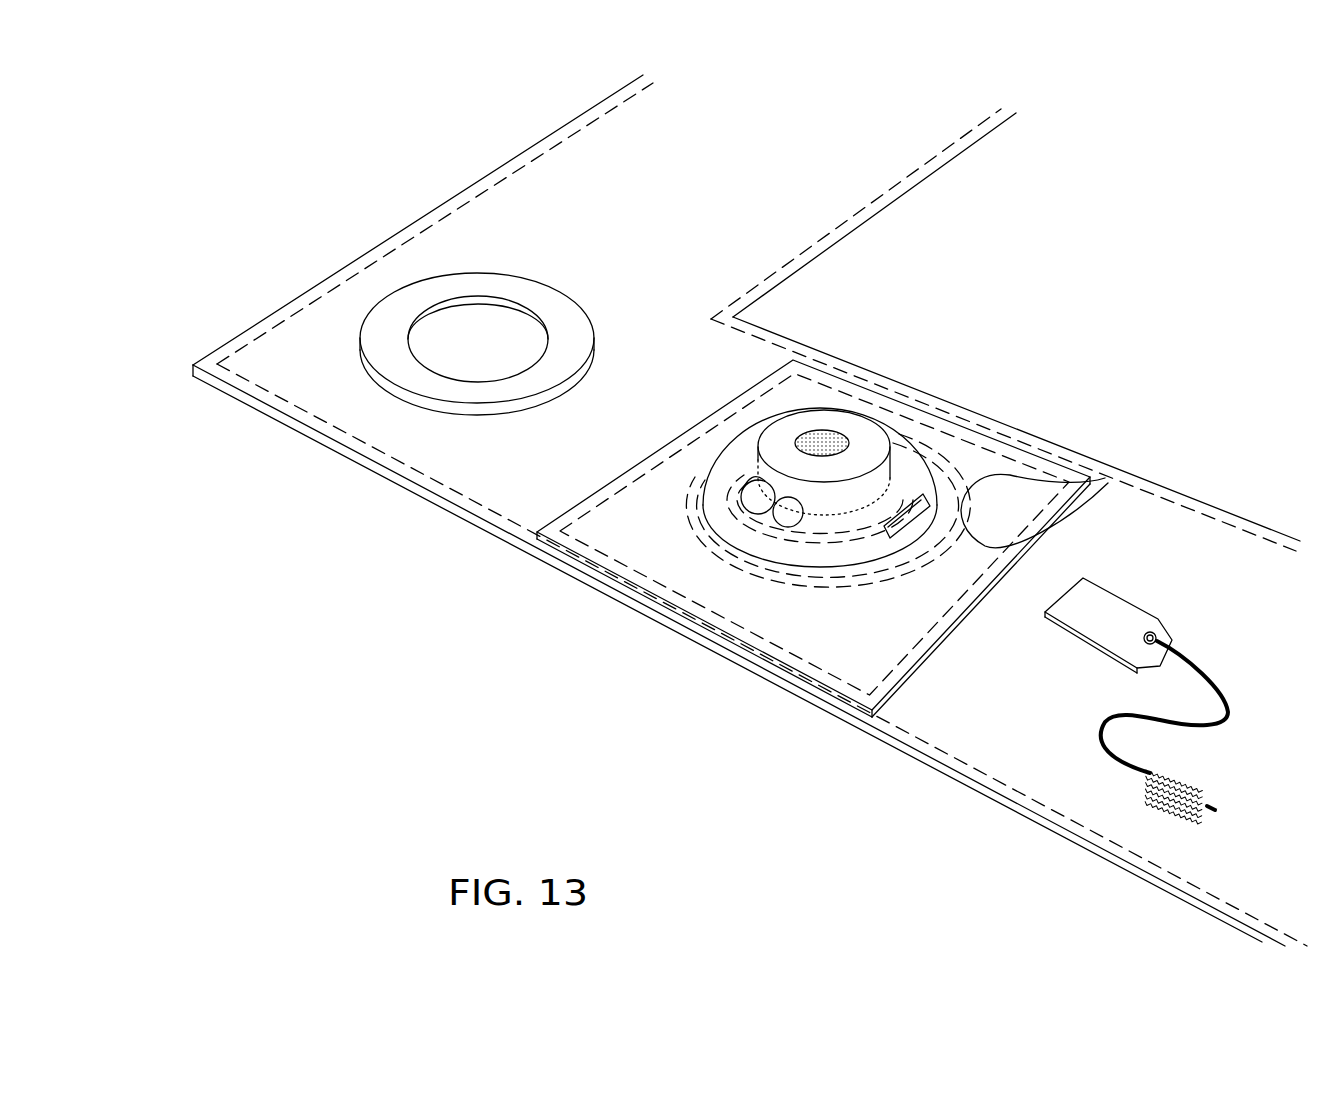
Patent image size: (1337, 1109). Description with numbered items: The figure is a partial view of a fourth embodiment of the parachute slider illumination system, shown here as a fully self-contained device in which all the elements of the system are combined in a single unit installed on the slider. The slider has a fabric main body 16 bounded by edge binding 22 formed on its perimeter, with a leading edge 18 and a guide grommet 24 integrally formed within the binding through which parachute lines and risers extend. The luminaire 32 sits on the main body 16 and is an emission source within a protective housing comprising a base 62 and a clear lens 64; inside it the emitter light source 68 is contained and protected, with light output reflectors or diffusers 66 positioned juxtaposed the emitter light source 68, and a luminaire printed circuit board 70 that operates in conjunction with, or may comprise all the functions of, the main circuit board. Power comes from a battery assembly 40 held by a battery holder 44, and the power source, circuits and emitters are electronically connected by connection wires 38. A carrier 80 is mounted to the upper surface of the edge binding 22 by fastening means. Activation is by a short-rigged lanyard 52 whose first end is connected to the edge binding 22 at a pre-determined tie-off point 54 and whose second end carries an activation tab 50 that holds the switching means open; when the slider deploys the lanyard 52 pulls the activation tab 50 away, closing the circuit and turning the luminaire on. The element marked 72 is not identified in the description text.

The main body 16 is at (953, 232).
The leading edge 18 is at (336, 448).
The edge binding 22 is at (543, 208).
The guide grommet 24 is at (390, 295).
The luminaire 32 is at (733, 540).
The connection wires 38 is at (1105, 478).
The battery assembly 40 is at (745, 512).
The battery holder 44 is at (755, 484).
The activation tab 50 is at (1113, 667).
The lanyard 52 is at (1118, 760).
The tie-off point 54 is at (1173, 803).
The base 62 is at (845, 593).
The lens 64 is at (760, 424).
The light output reflectors or diffusers 66 is at (879, 429).
The emitter light source 68 is at (818, 448).
The luminaire printed circuit board 70 is at (786, 545).
The tab 72 is at (917, 513).
The carrier 80 is at (741, 495).